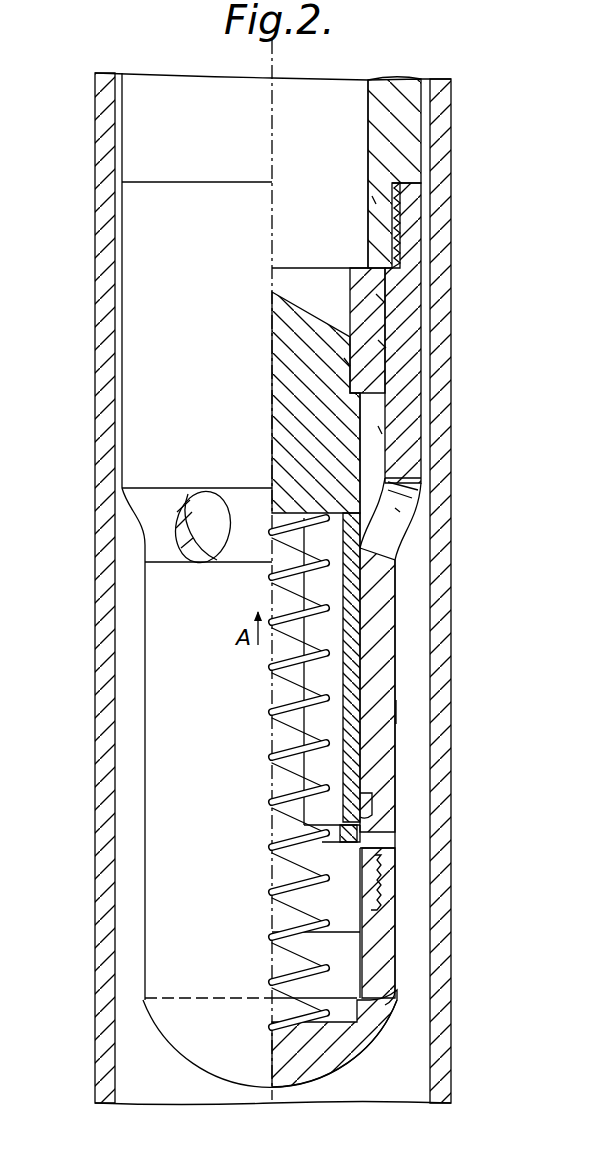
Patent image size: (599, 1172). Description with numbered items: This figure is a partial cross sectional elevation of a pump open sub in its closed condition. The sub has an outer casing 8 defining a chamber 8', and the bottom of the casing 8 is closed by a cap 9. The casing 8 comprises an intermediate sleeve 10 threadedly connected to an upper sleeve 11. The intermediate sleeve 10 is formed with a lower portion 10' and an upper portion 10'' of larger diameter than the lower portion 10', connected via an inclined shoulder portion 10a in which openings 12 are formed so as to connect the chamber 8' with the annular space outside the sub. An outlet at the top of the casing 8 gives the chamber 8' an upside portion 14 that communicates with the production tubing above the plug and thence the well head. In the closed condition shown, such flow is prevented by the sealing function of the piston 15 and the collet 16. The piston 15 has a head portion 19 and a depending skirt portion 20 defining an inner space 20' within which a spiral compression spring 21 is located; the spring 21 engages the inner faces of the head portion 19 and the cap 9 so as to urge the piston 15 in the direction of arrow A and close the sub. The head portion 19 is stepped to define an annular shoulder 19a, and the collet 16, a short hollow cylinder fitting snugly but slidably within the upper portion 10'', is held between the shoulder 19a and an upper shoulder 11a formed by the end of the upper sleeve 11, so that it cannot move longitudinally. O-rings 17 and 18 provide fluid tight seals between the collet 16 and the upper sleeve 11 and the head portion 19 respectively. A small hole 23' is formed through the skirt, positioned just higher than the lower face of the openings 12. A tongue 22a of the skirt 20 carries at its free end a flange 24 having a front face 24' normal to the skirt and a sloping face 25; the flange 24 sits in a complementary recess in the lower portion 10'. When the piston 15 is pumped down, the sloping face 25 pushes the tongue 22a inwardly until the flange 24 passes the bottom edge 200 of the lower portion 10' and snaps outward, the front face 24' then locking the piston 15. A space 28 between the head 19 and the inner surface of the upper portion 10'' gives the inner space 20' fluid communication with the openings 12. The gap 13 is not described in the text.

The outer casing 8 is at (422, 690).
The chamber 8' is at (431, 314).
The cap 9 is at (383, 968).
The intermediate sleeve 10 is at (441, 782).
The lower portion 10' is at (448, 712).
The upper portion 10'' is at (447, 333).
The inclined shoulder portion 10a is at (412, 552).
The upper sleeve 11 is at (410, 135).
The upper shoulder 11a is at (395, 232).
The openings 12 is at (397, 530).
The annular gap 13 is at (130, 701).
The upside portion 14 is at (330, 152).
The piston 15 is at (364, 460).
The collet 16 is at (384, 297).
The O-ring 17 is at (385, 272).
The O-ring 18 is at (382, 345).
The head portion 19 is at (345, 413).
The annular shoulder 19a is at (352, 362).
The skirt portion 20 is at (420, 667).
The inner space 20' is at (413, 923).
The spiral compression spring 21 is at (365, 1000).
The tongue 22a is at (352, 665).
The hole 23' is at (219, 516).
The flange 24 is at (401, 807).
The front face 24' is at (432, 774).
The sloping face 25 is at (345, 838).
The space 28 is at (392, 489).
The bottom edge 200 is at (365, 933).